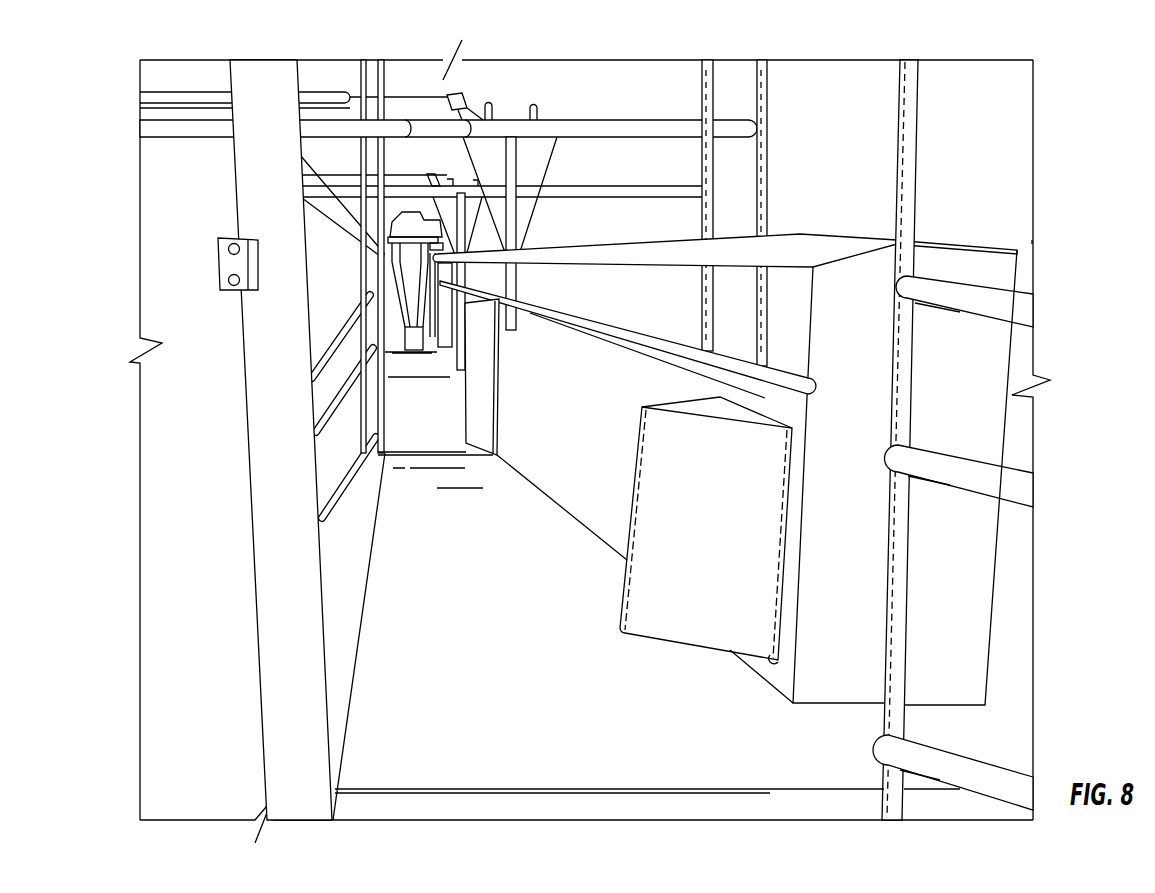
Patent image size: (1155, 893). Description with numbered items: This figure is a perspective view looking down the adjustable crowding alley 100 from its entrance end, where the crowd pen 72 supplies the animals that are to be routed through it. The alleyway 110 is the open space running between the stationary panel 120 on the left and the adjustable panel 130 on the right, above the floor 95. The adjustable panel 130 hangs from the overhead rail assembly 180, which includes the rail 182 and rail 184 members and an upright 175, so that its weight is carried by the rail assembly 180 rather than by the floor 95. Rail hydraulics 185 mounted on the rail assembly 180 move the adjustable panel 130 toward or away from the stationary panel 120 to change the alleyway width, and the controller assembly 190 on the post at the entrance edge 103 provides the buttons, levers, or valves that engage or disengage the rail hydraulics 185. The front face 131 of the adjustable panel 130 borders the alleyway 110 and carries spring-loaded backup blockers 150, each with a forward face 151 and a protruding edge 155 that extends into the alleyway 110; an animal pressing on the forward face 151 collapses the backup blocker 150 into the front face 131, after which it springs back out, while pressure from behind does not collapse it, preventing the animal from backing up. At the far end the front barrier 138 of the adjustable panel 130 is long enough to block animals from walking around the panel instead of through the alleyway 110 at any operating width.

The crowd pen 72 is at (880, 718).
The floor 95 is at (466, 525).
The adjustable crowding alley 100 is at (664, 99).
The entrance edge 103 is at (278, 437).
The alleyway 110 is at (380, 576).
The stationary panel 120 is at (342, 337).
The adjustable panel 130 is at (707, 370).
The front face 131 is at (610, 358).
The front barrier 138 is at (857, 273).
The backup blocker 150 is at (480, 355).
The forward face 151 is at (663, 477).
The protruding edge 155 is at (627, 513).
The vertical post 175 is at (712, 203).
The rail assembly 180 is at (583, 120).
The upper rail 182 is at (627, 120).
The lower rail 184 is at (610, 197).
The rail hydraulics 185 is at (460, 95).
The controller assembly 190 is at (233, 292).